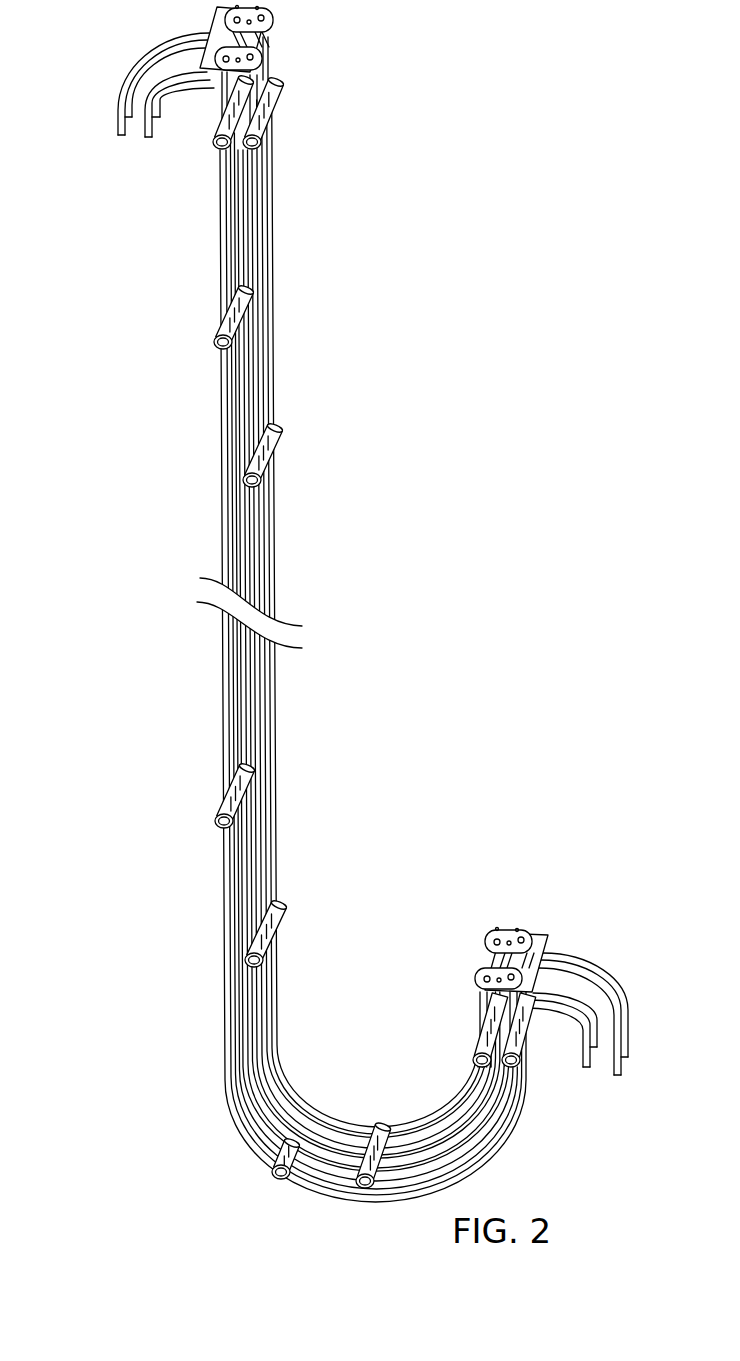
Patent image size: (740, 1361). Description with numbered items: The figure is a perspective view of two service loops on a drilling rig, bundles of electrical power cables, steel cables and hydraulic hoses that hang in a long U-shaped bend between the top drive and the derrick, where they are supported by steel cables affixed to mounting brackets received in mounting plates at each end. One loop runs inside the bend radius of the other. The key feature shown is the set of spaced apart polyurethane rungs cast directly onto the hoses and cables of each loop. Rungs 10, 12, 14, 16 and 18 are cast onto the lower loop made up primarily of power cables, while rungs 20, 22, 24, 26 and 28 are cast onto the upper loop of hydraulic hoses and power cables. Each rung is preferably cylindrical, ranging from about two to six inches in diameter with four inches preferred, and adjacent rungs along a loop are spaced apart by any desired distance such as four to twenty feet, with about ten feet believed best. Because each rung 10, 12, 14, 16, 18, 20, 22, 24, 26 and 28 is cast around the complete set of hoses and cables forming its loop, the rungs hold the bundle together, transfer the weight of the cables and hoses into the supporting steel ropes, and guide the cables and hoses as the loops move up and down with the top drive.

The rung 10 is at (212, 143).
The rung 12 is at (214, 341).
The rung 14 is at (215, 820).
The rung 16 is at (272, 1172).
The rung 18 is at (520, 1052).
The rung 20 is at (272, 96).
The rung 22 is at (277, 432).
The rung 24 is at (284, 909).
The rung 26 is at (383, 1125).
The rung 28 is at (473, 1059).